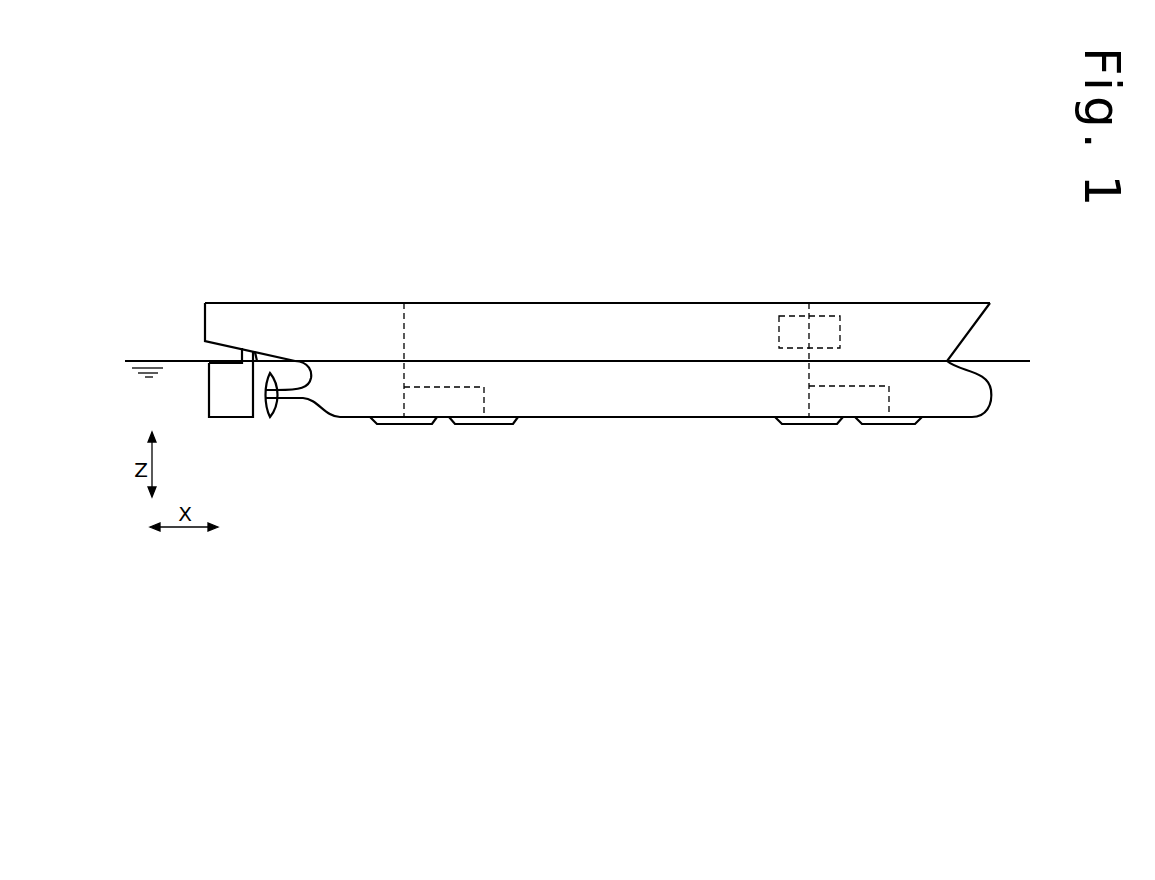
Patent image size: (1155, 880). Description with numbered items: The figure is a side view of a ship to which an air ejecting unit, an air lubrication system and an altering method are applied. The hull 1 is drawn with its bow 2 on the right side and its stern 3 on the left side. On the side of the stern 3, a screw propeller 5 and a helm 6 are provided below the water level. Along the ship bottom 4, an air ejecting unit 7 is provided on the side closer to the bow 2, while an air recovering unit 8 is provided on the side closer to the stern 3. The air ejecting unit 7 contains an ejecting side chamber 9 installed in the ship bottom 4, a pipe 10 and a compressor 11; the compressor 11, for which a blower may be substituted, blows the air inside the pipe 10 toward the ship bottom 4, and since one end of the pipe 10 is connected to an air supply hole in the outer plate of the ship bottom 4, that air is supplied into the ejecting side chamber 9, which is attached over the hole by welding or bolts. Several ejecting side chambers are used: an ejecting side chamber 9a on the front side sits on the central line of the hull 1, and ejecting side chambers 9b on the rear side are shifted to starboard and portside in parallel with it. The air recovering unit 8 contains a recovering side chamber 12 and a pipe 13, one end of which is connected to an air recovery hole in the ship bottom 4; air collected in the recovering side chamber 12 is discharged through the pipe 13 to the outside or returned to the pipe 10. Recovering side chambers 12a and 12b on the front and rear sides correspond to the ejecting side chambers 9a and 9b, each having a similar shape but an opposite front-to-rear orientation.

The hull 1 is at (858, 248).
The bow 2 is at (977, 323).
The stern 3 is at (205, 312).
The ship bottom 4 is at (633, 418).
The screw propeller 5 is at (268, 417).
The helm 6 is at (230, 417).
The air ejecting unit 7 is at (795, 295).
The air recovering unit 8 is at (442, 295).
The ejecting side chamber 9 is at (846, 470).
The ejecting side chamber on front side 9a is at (888, 450).
The ejecting side chamber on rear side 9b is at (808, 425).
The pipe 10 is at (809, 368).
The compressor 11 is at (840, 333).
The recovering side chamber 12 is at (442, 470).
The recovering side chamber on front side 12a is at (405, 425).
The recovering side chamber on rear side 12b is at (481, 450).
The pipe 13 is at (404, 368).